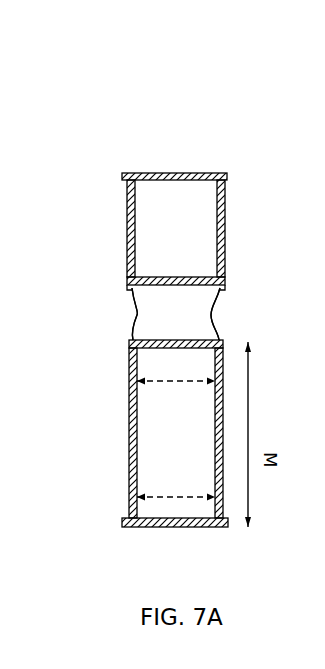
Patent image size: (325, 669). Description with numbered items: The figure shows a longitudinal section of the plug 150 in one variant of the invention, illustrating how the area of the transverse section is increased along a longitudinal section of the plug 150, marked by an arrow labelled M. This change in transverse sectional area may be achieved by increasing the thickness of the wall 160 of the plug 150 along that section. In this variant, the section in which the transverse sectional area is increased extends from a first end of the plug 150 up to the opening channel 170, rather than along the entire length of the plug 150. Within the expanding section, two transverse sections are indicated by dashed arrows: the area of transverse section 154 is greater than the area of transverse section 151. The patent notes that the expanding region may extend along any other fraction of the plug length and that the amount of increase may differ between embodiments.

The plug 150 is at (106, 106).
The wall 160 is at (127, 238).
The opening channel 170 is at (163, 310).
The transverse section 151 is at (177, 384).
The transverse section 154 is at (170, 490).